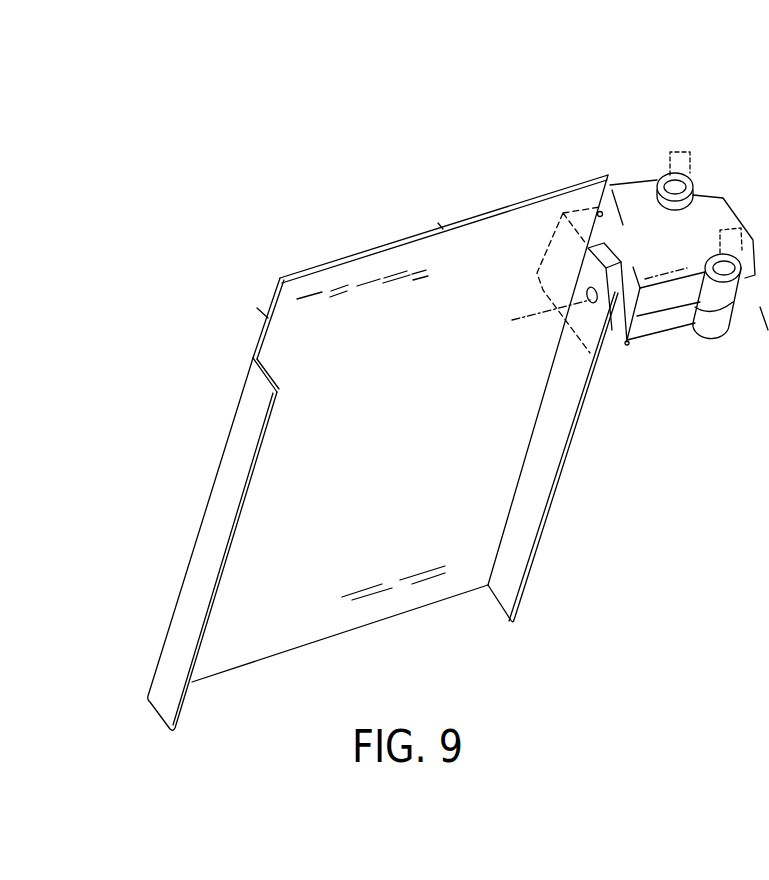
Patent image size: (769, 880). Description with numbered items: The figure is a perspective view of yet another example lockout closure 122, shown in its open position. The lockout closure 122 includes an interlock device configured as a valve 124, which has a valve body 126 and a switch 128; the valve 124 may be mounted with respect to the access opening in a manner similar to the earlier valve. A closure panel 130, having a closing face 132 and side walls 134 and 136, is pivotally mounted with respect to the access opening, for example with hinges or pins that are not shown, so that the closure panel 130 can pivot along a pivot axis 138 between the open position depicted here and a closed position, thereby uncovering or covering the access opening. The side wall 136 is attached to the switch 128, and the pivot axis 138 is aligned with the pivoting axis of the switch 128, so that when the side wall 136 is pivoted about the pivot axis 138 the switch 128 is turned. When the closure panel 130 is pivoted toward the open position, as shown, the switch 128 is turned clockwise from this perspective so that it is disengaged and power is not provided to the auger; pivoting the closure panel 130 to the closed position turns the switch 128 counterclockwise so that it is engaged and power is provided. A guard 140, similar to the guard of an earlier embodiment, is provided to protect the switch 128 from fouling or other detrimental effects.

The lockout closure 122 is at (545, 150).
The valve 124 is at (648, 158).
The valve body 126 is at (712, 207).
The switch 128 is at (605, 335).
The closure panel 130 is at (357, 238).
The closing face 132 is at (421, 431).
The side wall 134 is at (235, 468).
The side wall 136 is at (537, 473).
The pivot axis 138 is at (537, 313).
The guard 140 is at (600, 213).